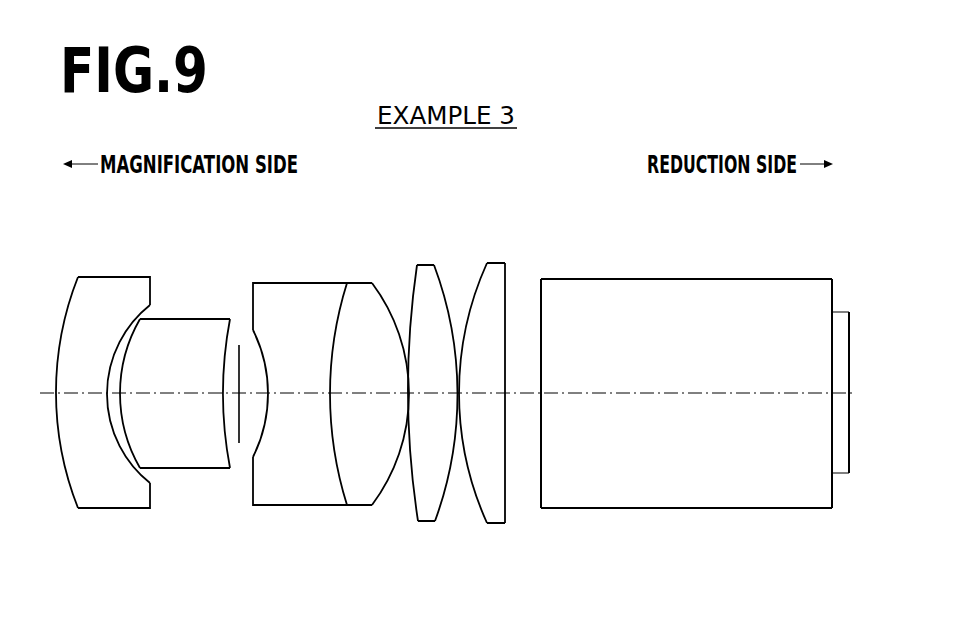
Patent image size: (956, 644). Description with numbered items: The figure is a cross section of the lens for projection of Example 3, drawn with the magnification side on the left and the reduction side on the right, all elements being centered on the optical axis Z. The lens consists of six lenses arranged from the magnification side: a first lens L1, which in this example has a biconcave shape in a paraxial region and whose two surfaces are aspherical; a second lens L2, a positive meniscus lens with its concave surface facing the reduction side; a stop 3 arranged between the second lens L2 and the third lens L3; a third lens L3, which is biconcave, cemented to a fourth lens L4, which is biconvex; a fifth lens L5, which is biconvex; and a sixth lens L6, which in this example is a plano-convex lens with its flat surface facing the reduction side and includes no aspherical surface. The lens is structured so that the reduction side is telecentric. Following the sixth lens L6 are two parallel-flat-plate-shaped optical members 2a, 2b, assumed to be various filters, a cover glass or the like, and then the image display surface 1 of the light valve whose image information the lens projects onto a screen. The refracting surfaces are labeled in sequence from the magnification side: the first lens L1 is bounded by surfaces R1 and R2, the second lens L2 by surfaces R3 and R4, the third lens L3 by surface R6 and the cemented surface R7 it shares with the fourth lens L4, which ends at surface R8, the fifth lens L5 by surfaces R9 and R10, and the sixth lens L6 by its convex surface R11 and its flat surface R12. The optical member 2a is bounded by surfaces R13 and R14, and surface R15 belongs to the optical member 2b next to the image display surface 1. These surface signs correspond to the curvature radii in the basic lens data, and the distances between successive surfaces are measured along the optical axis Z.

The first lens L1 is at (103, 410).
The second lens L2 is at (176, 391).
The third lens L3 is at (297, 410).
The fourth lens L4 is at (369, 391).
The fifth lens L5 is at (419, 410).
The sixth lens L6 is at (492, 410).
The stop 3 is at (239, 345).
The optical axis Z is at (42, 391).
The first surface R1 is at (67, 488).
The second surface R2 is at (120, 470).
The third surface R3 is at (146, 463).
The fourth surface R4 is at (229, 437).
The sixth surface R6 is at (258, 440).
The seventh surface R7 is at (345, 495).
The eighth surface R8 is at (386, 495).
The ninth surface R9 is at (415, 490).
The tenth surface R10 is at (450, 495).
The eleventh surface R11 is at (478, 495).
The twelfth surface R12 is at (506, 484).
The thirteenth surface R13 is at (540, 487).
The fourteenth surface R14 is at (833, 492).
The fifteenth surface R15 is at (849, 470).
The optical member 2a is at (681, 417).
The optical member 2b is at (831, 417).
The image display surface 1 is at (849, 320).